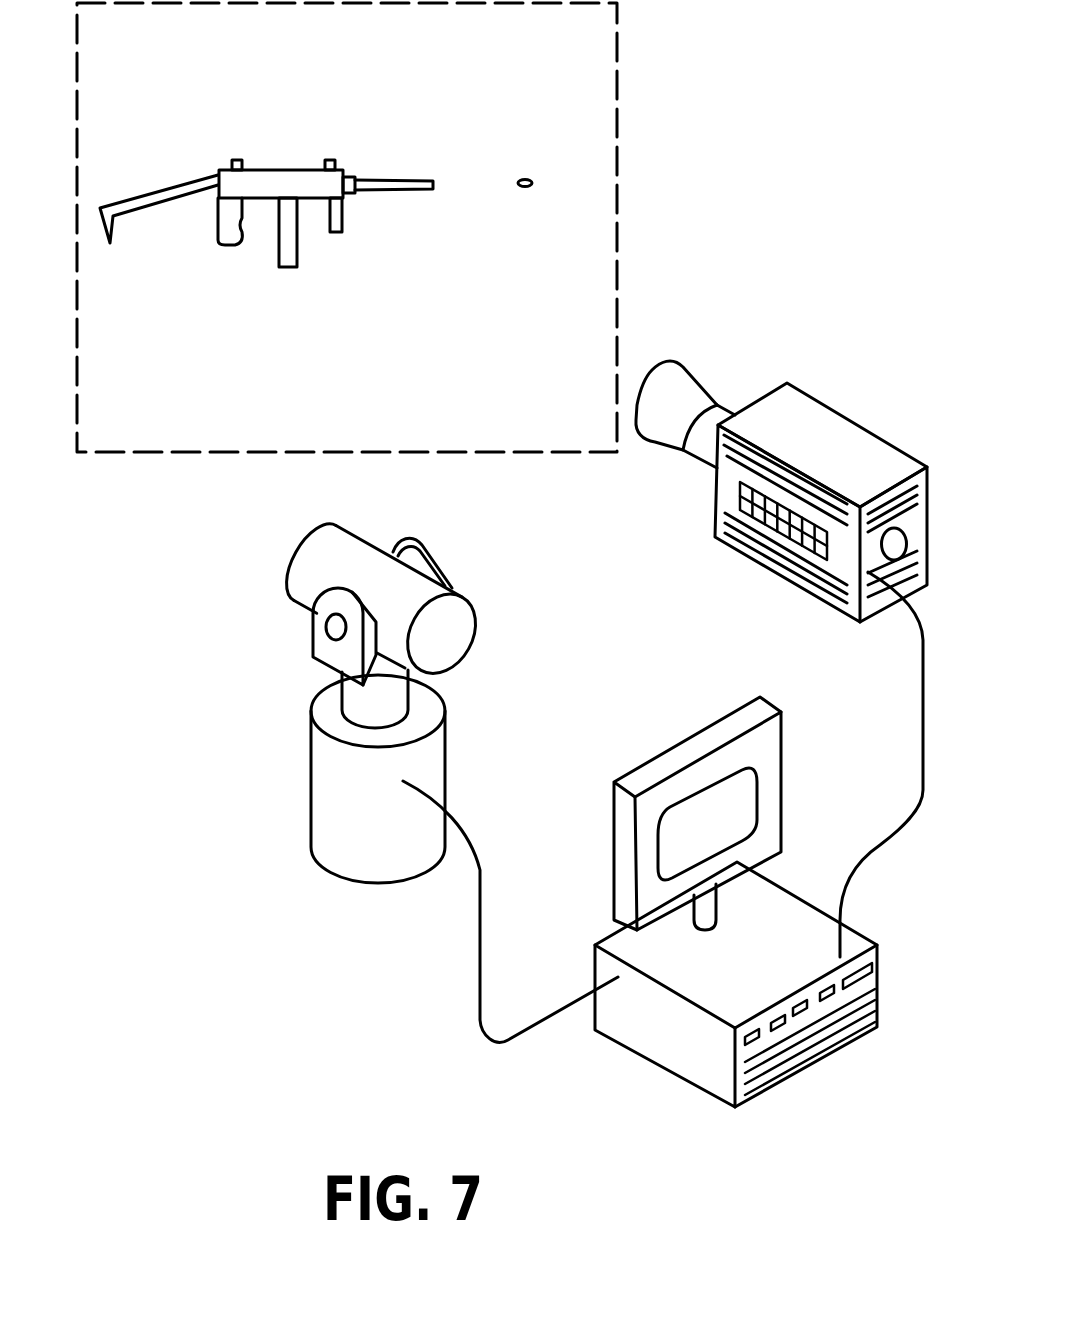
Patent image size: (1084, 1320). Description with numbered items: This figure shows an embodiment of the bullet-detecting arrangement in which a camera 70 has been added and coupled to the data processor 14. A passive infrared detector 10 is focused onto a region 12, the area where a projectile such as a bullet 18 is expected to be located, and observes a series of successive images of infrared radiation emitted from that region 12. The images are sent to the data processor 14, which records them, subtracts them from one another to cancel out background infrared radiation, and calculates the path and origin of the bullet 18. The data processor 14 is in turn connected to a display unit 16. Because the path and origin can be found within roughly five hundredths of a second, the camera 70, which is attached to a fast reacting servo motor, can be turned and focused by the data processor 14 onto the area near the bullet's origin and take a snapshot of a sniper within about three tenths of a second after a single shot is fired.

The passive infrared detector 10 is at (838, 440).
The region 12 is at (200, 61).
The data processor 14 is at (655, 1032).
The display unit 16 is at (740, 798).
The bullet 18 is at (531, 178).
The camera 70 is at (310, 582).